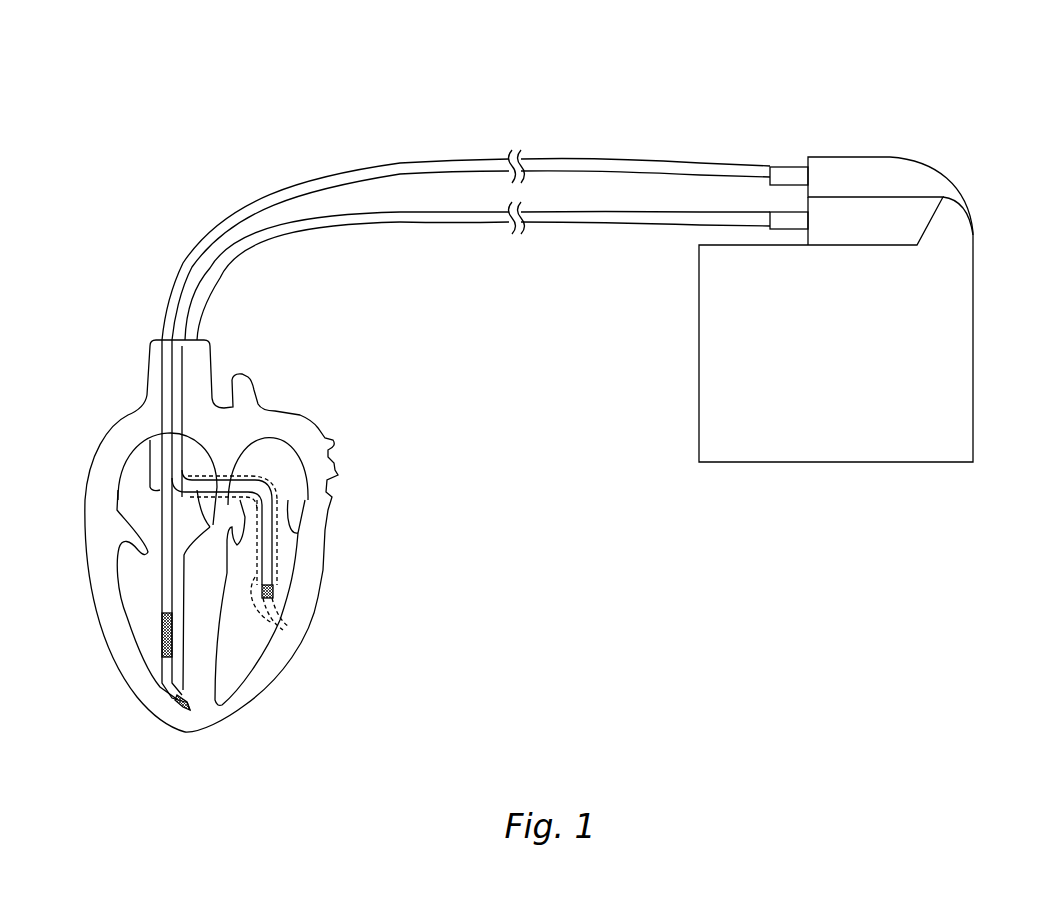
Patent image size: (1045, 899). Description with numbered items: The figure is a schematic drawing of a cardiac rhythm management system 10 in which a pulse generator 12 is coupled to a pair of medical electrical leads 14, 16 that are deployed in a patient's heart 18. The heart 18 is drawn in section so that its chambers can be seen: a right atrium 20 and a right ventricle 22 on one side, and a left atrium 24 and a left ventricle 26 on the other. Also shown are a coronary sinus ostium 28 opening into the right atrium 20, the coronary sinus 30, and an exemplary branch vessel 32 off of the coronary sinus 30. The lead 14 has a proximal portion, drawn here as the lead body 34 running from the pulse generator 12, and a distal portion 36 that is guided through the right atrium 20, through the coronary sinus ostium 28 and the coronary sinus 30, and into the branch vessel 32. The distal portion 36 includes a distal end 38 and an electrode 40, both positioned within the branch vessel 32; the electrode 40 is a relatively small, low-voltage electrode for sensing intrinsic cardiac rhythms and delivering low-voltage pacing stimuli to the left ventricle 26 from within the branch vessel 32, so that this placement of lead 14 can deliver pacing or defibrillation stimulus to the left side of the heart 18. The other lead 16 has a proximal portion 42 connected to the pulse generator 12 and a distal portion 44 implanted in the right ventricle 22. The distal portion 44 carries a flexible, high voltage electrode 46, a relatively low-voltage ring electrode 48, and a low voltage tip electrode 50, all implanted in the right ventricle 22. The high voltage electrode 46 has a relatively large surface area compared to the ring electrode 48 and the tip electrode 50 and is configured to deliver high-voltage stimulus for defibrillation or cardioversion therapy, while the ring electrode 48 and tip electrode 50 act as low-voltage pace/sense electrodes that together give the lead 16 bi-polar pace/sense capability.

The cardiac rhythm management system 10 is at (755, 88).
The pulse generator 12 is at (976, 332).
The medical electrical lead 14 is at (620, 230).
The medical electrical lead 16 is at (603, 158).
The heart 18 is at (327, 566).
The right atrium 20 is at (125, 512).
The right ventricle 22 is at (143, 627).
The left atrium 24 is at (270, 457).
The left ventricle 26 is at (253, 670).
The coronary sinus ostium 28 is at (184, 490).
The coronary sinus 30 is at (263, 488).
The branch vessel 32 is at (252, 562).
The lead body 34 is at (358, 230).
The distal portion 36 is at (143, 487).
The distal end 38 is at (274, 628).
The electrode 40 is at (274, 592).
The proximal portion 42 is at (669, 158).
The distal portion 44 is at (156, 597).
The high voltage electrode 46 is at (160, 640).
The ring electrode 48 is at (172, 696).
The tip electrode 50 is at (187, 704).